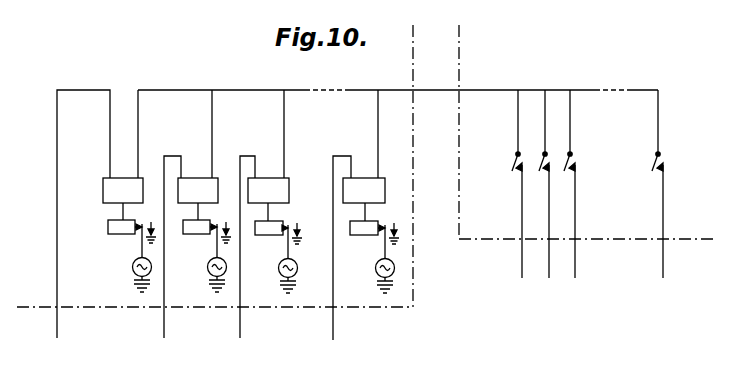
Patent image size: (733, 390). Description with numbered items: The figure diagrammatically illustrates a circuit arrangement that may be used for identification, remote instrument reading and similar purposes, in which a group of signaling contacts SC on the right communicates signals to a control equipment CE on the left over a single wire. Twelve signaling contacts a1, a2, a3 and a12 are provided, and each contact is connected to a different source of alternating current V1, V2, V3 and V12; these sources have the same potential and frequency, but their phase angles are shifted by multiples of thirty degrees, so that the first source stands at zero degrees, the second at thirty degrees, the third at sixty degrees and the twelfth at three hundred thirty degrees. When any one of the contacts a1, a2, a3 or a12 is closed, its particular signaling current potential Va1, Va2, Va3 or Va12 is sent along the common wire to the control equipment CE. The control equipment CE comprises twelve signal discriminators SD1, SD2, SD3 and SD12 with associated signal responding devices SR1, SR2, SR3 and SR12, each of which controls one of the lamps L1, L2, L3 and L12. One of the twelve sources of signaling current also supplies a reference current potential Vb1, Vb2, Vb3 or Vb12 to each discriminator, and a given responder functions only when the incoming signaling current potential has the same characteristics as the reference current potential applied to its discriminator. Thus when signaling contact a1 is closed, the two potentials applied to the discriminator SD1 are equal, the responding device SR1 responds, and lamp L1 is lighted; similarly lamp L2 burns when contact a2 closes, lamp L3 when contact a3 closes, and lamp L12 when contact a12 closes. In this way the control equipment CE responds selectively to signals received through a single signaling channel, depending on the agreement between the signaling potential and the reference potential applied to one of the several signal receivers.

The control equipment CE is at (246, 71).
The signaling contacts SC is at (546, 75).
The reference current potential Vb1 is at (68, 214).
The reference current potential Vb2 is at (176, 236).
The reference current potential Vb3 is at (254, 236).
The reference current potential Vb12 is at (350, 238).
The signaling current potential Va1 is at (328, 134).
The signaling current potential Va2 is at (378, 134).
The signaling current potential Va3 is at (428, 134).
The signaling current potential Va12 is at (518, 134).
The signal discriminator SD1 is at (123, 190).
The signal discriminator SD2 is at (198, 190).
The signal discriminator SD3 is at (268, 190).
The signal discriminator SD12 is at (364, 190).
The signal responding device SR1 is at (121, 219).
The signal responding device SR2 is at (196, 219).
The signal responding device SR3 is at (269, 219).
The signal responding device SR12 is at (364, 219).
The lamp L1 is at (133, 257).
The lamp L2 is at (208, 257).
The lamp L3 is at (281, 258).
The lamp L12 is at (376, 258).
The source of alternating current V1 is at (288, 272).
The source of alternating current V2 is at (357, 273).
The source of alternating current V3 is at (415, 273).
The source of alternating current V12 is at (499, 273).
The signaling contact a1 is at (509, 177).
The signaling contact a2 is at (538, 177).
The signaling contact a3 is at (564, 177).
The signaling contact a12 is at (646, 177).